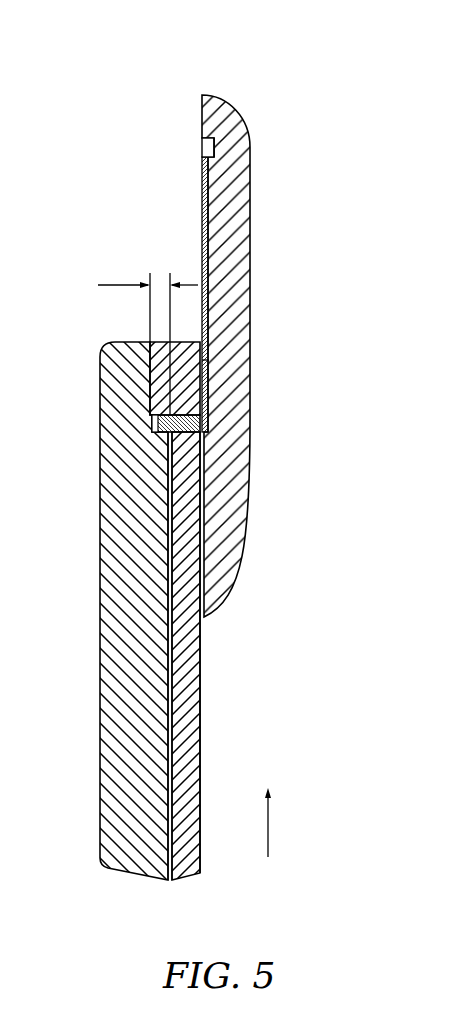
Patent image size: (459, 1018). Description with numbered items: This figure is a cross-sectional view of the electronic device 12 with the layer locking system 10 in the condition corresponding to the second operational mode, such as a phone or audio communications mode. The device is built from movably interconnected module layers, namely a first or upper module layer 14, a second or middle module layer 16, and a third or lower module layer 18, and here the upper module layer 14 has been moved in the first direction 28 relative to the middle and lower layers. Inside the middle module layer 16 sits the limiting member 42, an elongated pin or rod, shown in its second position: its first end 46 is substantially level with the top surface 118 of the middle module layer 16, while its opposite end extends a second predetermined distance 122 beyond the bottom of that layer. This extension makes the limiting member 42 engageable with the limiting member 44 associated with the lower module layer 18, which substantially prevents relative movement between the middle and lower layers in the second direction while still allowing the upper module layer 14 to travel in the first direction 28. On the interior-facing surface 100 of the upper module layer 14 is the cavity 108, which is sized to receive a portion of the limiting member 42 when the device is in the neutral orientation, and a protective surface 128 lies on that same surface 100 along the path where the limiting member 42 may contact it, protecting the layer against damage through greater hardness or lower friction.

The electronic device 12 is at (162, 69).
The first module layer 14 is at (227, 110).
The cavity 108 is at (200, 145).
The first end 46 is at (222, 147).
The interior-facing surface 100 is at (200, 197).
The second predetermined distance 122 is at (108, 284).
The layer locking system 10 is at (145, 410).
The protective surface 128 is at (209, 362).
The limiting member 44 is at (148, 434).
The limiting member 42 is at (169, 438).
The top surface 118 is at (205, 675).
The second module layer 16 is at (192, 793).
The third module layer 18 is at (107, 838).
The first direction 28 is at (268, 833).